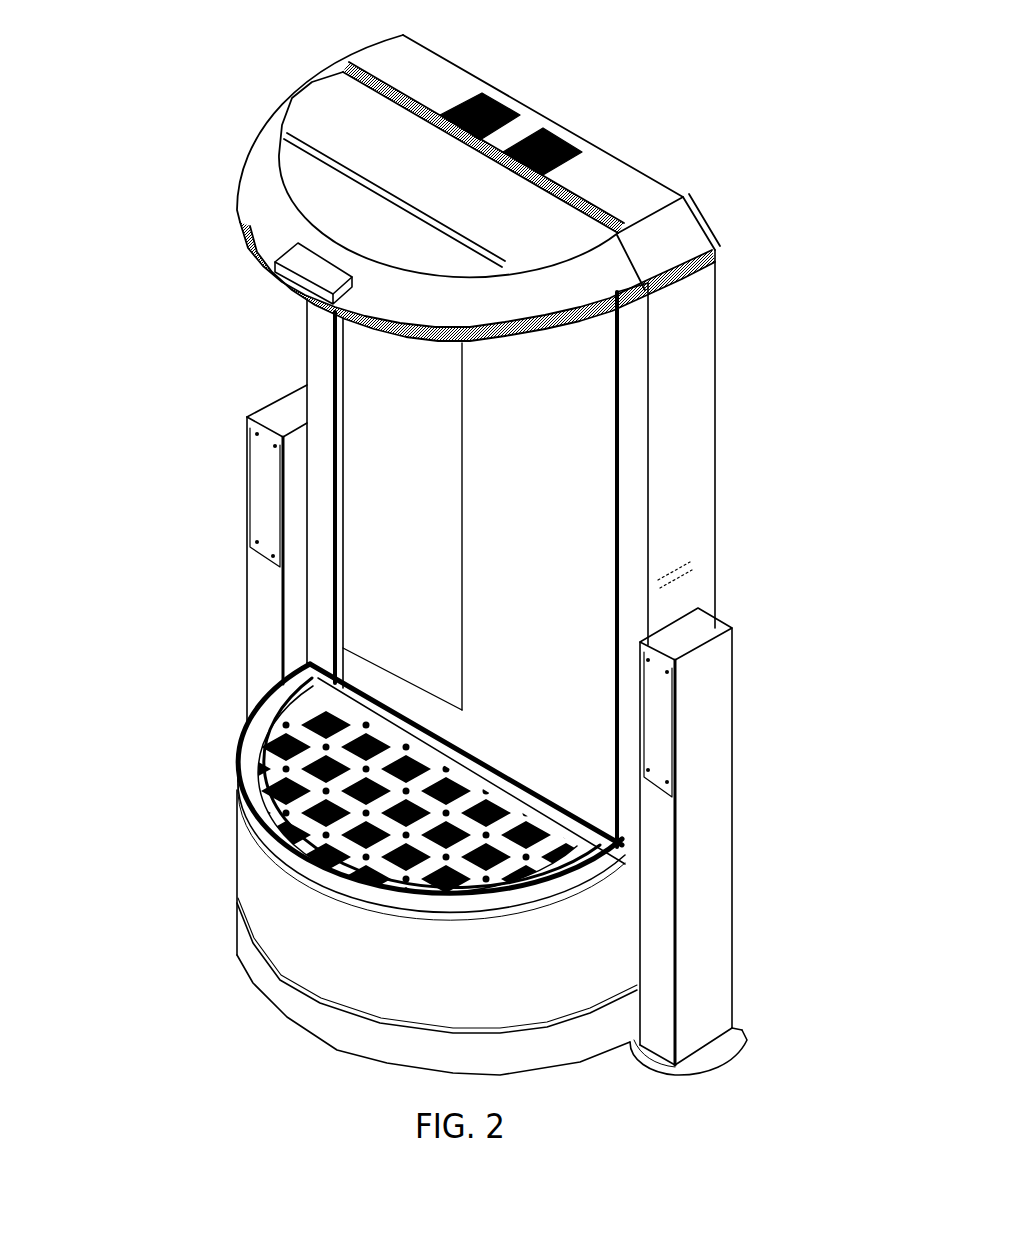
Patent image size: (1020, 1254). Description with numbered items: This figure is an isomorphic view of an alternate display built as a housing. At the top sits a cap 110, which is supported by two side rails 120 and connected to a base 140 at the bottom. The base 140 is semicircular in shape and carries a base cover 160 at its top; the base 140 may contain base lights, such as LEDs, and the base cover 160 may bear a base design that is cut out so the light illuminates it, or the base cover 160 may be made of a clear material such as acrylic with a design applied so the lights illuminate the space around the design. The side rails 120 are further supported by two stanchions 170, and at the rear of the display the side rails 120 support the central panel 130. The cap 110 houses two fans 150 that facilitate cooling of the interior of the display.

The cap 110 is at (650, 180).
The side rails 120 is at (307, 350).
The central panel 130 is at (567, 532).
The base 140 is at (237, 862).
The fans 150 is at (497, 103).
The base cover 160 is at (627, 852).
The stanchions 170 is at (247, 593).